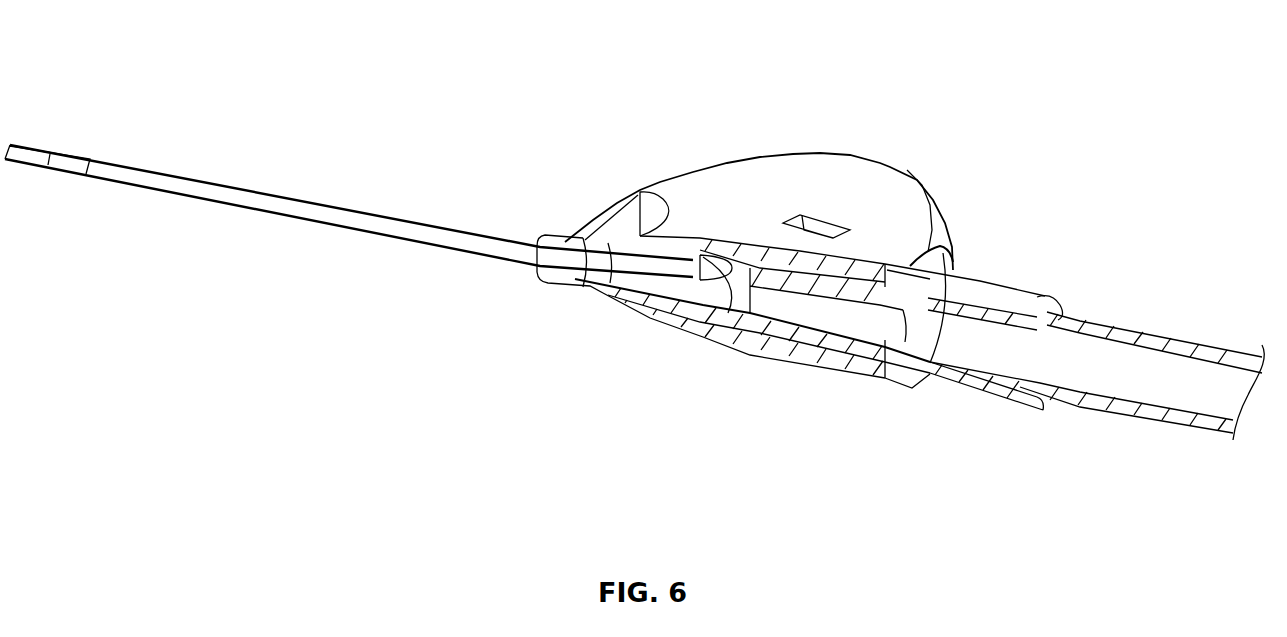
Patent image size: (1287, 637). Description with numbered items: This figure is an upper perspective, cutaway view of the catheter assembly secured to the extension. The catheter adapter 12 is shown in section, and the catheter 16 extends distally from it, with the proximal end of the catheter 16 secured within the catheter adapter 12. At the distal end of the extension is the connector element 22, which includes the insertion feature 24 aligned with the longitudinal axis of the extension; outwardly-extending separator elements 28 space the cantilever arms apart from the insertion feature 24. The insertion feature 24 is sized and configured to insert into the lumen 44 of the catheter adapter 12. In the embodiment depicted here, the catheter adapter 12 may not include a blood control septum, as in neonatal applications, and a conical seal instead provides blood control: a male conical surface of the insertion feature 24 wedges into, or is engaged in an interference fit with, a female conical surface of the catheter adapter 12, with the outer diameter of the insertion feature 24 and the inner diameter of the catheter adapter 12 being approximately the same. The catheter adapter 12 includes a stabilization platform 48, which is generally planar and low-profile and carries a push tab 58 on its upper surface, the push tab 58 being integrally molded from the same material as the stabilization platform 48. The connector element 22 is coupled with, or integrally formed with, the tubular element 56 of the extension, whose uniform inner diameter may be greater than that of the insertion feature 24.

The catheter adapter 12 is at (786, 96).
The catheter 16 is at (312, 197).
The connector element 22 is at (1024, 270).
The insertion feature 24 is at (810, 337).
The separator elements 28 is at (955, 249).
The lumen 44 is at (710, 312).
The stabilization platform 48 is at (897, 176).
The tubular element 56 is at (1130, 328).
The push tab 58 is at (650, 197).